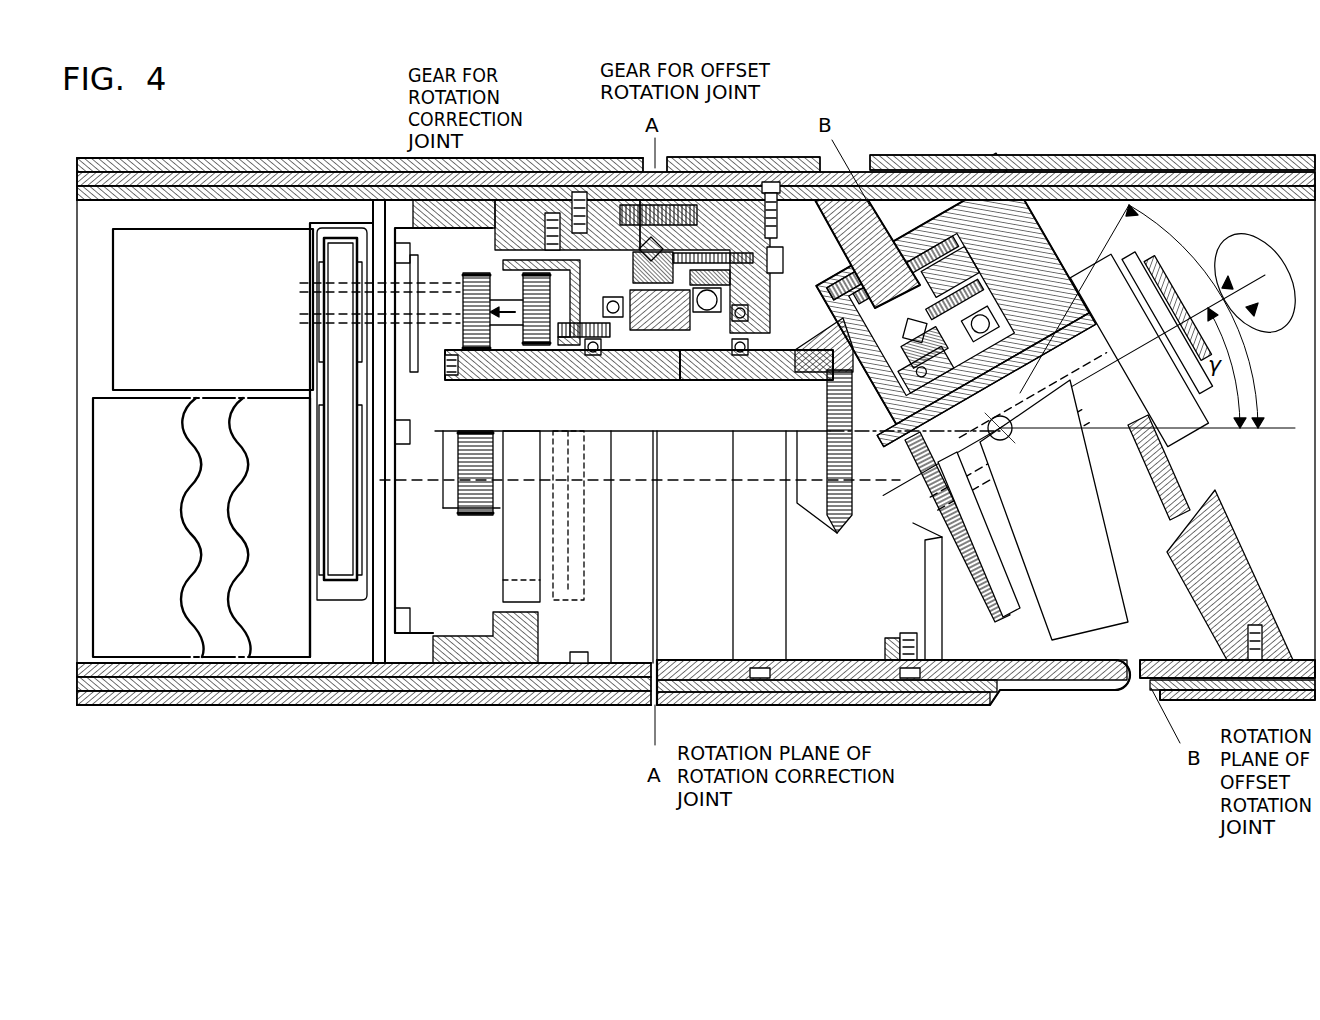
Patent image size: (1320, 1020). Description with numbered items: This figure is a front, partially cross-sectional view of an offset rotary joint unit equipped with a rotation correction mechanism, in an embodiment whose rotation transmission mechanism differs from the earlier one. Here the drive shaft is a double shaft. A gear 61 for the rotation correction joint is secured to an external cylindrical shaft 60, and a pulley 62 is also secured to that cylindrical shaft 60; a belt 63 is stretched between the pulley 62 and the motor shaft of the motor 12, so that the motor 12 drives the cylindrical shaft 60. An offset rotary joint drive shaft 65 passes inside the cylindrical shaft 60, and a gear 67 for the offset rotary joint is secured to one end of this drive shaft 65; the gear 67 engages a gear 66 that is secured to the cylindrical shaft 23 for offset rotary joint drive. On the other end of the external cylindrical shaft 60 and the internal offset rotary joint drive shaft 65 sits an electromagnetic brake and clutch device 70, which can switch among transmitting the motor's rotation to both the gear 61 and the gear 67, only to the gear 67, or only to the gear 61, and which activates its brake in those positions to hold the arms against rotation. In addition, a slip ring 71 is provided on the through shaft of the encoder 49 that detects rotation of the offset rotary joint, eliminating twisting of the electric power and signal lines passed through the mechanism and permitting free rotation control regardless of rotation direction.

The motor 12 is at (265, 633).
The cylindrical shaft for offset rotary joint drive 23 is at (673, 380).
The encoder 49 is at (1105, 270).
The external cylindrical shaft 60 is at (400, 408).
The gear for rotation correction joint 61 is at (468, 268).
The pulley 62 is at (347, 246).
The belt 63 is at (338, 236).
The offset rotary joint drive shaft 65 is at (415, 335).
The gear 66 is at (558, 382).
The gear for offset rotary joint 67 is at (538, 270).
The electromagnetic brake and clutch device 70 is at (157, 243).
The slip ring 71 is at (1140, 283).